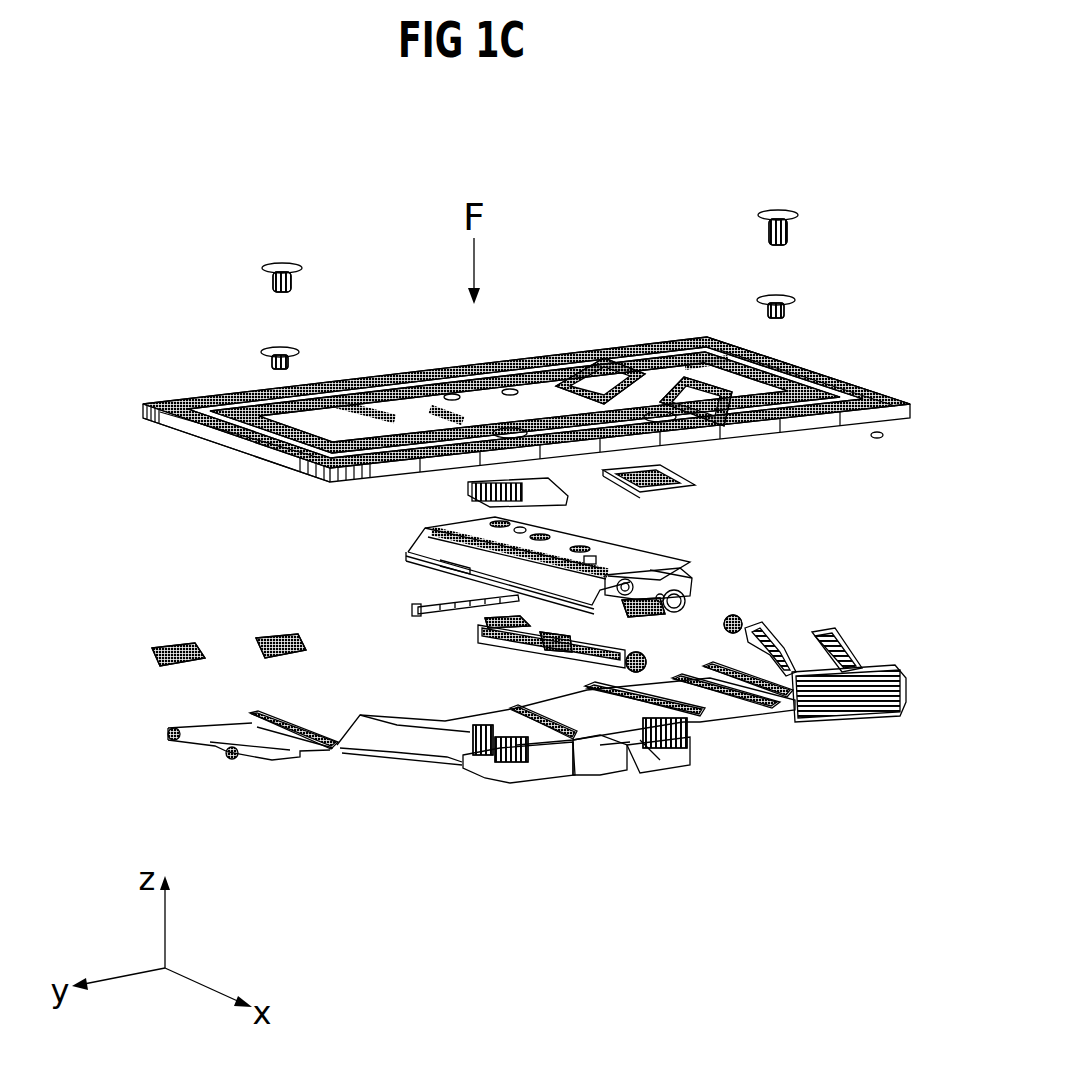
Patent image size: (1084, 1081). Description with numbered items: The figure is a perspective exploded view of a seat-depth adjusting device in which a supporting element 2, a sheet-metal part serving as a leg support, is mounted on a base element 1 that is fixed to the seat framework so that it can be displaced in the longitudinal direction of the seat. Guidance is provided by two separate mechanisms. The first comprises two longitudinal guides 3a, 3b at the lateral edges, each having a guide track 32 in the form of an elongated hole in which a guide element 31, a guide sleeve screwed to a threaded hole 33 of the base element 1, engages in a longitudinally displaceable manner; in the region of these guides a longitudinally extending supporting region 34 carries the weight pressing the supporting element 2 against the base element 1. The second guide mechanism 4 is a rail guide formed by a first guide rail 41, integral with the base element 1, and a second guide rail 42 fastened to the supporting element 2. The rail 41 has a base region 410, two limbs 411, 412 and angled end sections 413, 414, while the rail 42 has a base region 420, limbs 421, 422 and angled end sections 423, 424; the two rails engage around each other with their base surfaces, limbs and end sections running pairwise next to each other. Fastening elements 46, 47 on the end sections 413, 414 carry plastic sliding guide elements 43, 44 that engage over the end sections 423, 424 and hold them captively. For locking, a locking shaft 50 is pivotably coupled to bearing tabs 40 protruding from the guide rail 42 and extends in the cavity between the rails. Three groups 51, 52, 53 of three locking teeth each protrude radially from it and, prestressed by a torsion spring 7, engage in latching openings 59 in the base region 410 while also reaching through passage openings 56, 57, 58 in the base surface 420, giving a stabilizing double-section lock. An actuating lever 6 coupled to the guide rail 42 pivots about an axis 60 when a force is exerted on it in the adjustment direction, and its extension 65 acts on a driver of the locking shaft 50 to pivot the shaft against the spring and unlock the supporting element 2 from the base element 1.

The base element 1 is at (398, 762).
The supporting element 2 is at (526, 344).
The longitudinal guide 3a is at (219, 468).
The longitudinal guide 3b is at (815, 350).
The guide element 31 is at (296, 346).
The guide track 32 is at (217, 414).
The threaded hole 33 is at (262, 730).
The supporting region 34 is at (336, 752).
The second guide mechanism 4 is at (670, 672).
The bearing tab 40 is at (666, 575).
The first guide rail 41 is at (605, 748).
The base region 410 is at (651, 757).
The limb 411 is at (581, 780).
The limb 412 is at (627, 748).
The angled end section 413 is at (537, 783).
The angled end section 414 is at (688, 772).
The second guide rail 42 is at (622, 557).
The base region 420 is at (566, 543).
The limb 421 is at (432, 542).
The limb 422 is at (693, 578).
The angled end section 423 is at (448, 566).
The angled end section 424 is at (686, 598).
The sliding guide element 43 is at (556, 496).
The sliding guide element 44 is at (690, 492).
The fastening element 46 is at (478, 750).
The fastening element 47 is at (690, 740).
The locking shaft 50 is at (524, 648).
The group of locking teeth 51 is at (484, 636).
The group of locking teeth 52 is at (553, 662).
The group of locking teeth 53 is at (604, 652).
The passage openings 56 is at (515, 528).
The passage openings 57 is at (470, 579).
The passage openings 58 is at (594, 560).
The latching points 59 is at (620, 718).
The pivot axis 60 is at (436, 617).
The actuating lever 6 is at (898, 662).
The extension 65 is at (768, 636).
The torsion spring 7 is at (686, 610).